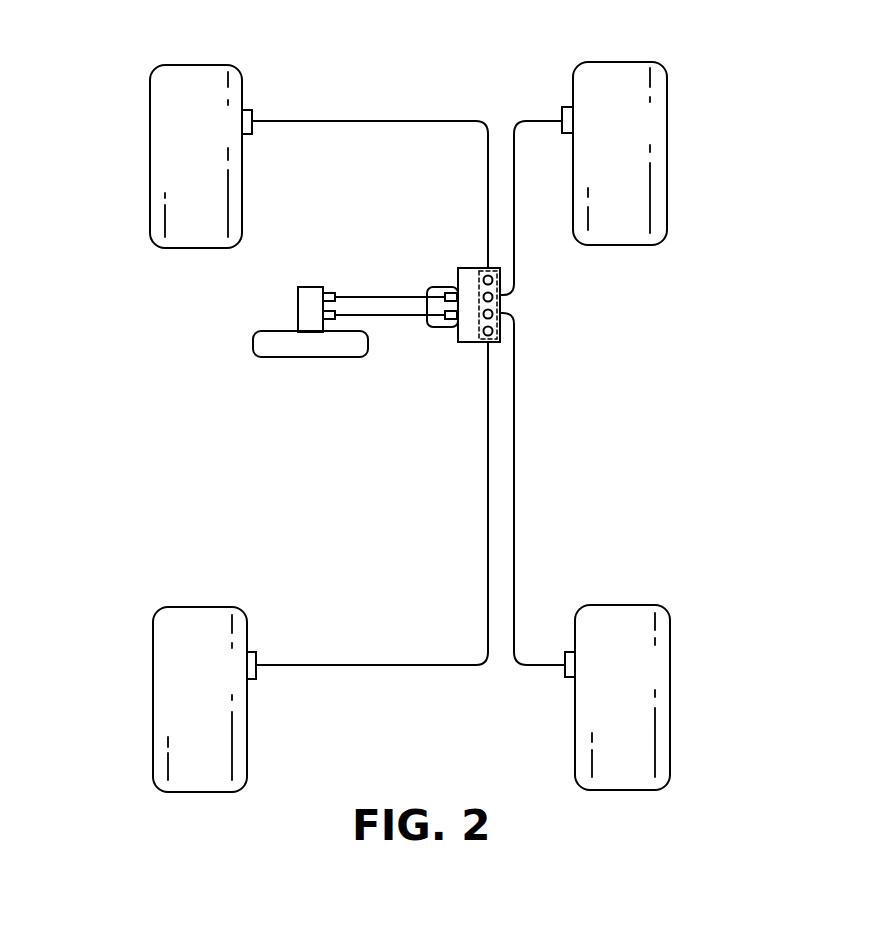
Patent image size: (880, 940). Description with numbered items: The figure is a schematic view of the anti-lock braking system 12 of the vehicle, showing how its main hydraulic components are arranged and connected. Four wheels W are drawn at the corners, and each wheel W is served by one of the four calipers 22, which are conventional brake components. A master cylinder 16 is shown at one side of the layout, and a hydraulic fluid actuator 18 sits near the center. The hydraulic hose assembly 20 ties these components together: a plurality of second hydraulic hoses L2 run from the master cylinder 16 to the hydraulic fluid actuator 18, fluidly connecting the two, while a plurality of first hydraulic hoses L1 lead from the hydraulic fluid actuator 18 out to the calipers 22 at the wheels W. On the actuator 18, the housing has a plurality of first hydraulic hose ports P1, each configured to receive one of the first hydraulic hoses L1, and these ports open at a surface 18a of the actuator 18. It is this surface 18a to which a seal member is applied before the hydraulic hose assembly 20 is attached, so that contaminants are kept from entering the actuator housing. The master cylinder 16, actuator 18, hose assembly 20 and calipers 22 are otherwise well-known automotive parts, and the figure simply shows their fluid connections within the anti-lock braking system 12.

The anti-lock braking system 12 is at (672, 31).
The wheels W is at (150, 123).
The calipers 22 is at (252, 113).
The first hydraulic hoses L1 is at (340, 123).
The master cylinder 16 is at (298, 310).
The second hydraulic hoses L2 is at (367, 296).
The surface of the actuator 18a is at (467, 285).
The hydraulic fluid actuator 18 is at (502, 304).
The first hydraulic hose ports P1 is at (481, 292).
The hydraulic hose assembly 20 is at (529, 287).